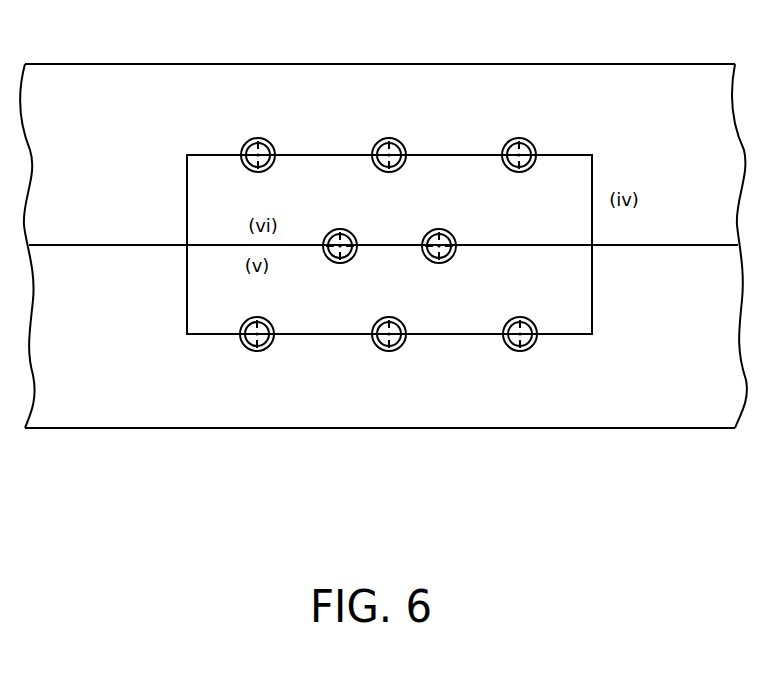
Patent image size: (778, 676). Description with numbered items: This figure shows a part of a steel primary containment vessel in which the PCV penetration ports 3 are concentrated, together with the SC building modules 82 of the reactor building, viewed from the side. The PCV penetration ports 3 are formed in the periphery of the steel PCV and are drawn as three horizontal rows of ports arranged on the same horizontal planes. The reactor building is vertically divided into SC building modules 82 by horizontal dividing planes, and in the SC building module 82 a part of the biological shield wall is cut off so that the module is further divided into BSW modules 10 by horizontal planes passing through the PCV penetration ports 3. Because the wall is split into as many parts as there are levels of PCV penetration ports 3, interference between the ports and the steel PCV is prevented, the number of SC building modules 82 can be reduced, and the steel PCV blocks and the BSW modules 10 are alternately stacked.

The PCV penetration port 3 is at (518, 138).
The BSW module 10 is at (210, 228).
The SC building module 82 is at (625, 388).